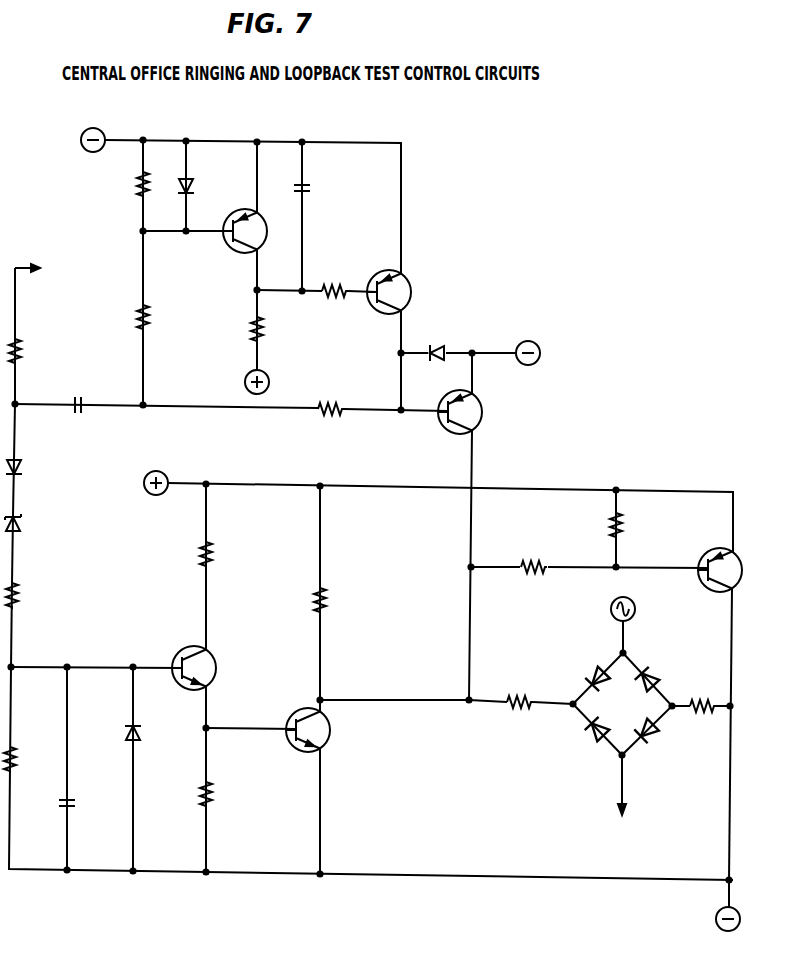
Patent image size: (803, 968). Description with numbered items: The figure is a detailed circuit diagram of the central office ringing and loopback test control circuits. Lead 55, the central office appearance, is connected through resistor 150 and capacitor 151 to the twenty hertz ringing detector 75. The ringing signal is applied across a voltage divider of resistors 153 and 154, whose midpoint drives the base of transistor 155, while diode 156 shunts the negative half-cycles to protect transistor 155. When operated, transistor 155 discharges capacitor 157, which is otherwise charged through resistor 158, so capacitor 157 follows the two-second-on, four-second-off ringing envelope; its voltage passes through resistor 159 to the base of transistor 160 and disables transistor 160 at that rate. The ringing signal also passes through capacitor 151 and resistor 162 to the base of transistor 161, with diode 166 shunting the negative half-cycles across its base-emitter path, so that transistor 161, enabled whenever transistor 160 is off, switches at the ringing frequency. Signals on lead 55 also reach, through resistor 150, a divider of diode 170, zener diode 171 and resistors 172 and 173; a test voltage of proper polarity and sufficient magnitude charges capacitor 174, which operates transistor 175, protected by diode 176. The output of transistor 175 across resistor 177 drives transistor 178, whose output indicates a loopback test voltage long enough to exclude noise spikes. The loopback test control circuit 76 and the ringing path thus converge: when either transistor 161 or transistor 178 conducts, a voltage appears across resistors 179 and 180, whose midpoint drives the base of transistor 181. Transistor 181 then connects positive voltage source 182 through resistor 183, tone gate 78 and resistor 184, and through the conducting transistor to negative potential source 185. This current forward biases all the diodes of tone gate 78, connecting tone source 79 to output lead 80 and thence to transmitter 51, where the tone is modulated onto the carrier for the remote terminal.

The ringing detector 75 is at (251, 139).
The loopback test control circuit 76 is at (376, 480).
The tone gate 78 is at (633, 712).
The tone source 79 is at (632, 625).
The output lead 80 is at (622, 784).
The lead 55 is at (71, 271).
The transmitter 51 is at (620, 839).
The resistor 150 is at (30, 336).
The capacitor 151 is at (165, 392).
The resistor 153 is at (131, 185).
The resistor 154 is at (163, 316).
The transistor 155 is at (205, 216).
The diode 156 is at (198, 186).
The capacitor 157 is at (316, 216).
The resistor 158 is at (247, 342).
The resistor 159 is at (315, 279).
The transistor 160 is at (402, 340).
The transistor 161 is at (474, 526).
The resistor 162 is at (382, 398).
The diode 166 is at (457, 343).
The diode 170 is at (28, 459).
The zener diode 171 is at (28, 548).
The resistor 172 is at (28, 625).
The resistor 173 is at (368, 772).
The capacitor 174 is at (81, 768).
The transistor 175 is at (127, 760).
The diode 176 is at (146, 768).
The resistor 177 is at (219, 795).
The transistor 178 is at (339, 786).
The resistor 179 is at (630, 528).
The resistor 180 is at (588, 555).
The transistor 181 is at (720, 703).
The positive voltage source 182 is at (157, 473).
The resistor 183 is at (702, 694).
The resistor 184 is at (521, 690).
The negative potential source 185 is at (628, 636).